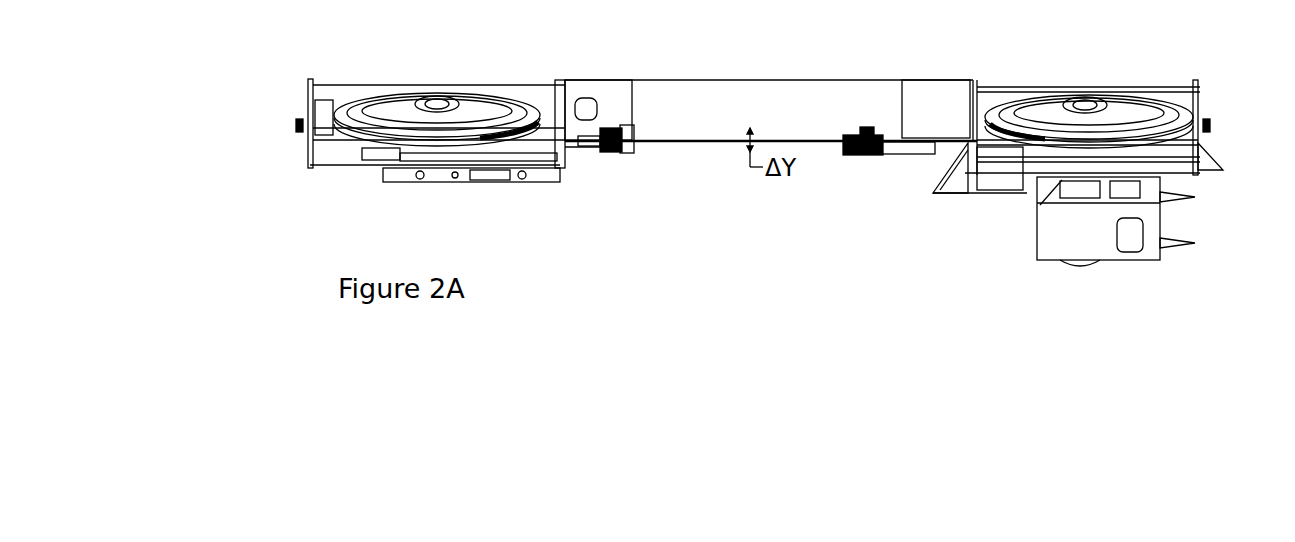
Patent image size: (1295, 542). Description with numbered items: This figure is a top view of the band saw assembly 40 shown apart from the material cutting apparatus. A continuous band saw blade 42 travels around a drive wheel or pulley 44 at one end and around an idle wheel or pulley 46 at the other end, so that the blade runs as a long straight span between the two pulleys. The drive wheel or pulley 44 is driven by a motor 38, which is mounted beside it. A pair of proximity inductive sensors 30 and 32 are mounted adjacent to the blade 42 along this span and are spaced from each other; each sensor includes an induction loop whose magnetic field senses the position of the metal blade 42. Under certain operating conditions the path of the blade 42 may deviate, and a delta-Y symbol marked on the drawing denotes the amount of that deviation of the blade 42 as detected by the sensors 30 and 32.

The proximity inductive sensor 30 is at (883, 157).
The proximity inductive sensor 32 is at (612, 152).
The motor 38 is at (1165, 228).
The band saw assembly 40 is at (830, 200).
The continuous band saw blade 42 is at (733, 147).
The drive wheel or pulley 44 is at (1128, 95).
The idle wheel or pulley 46 is at (392, 93).